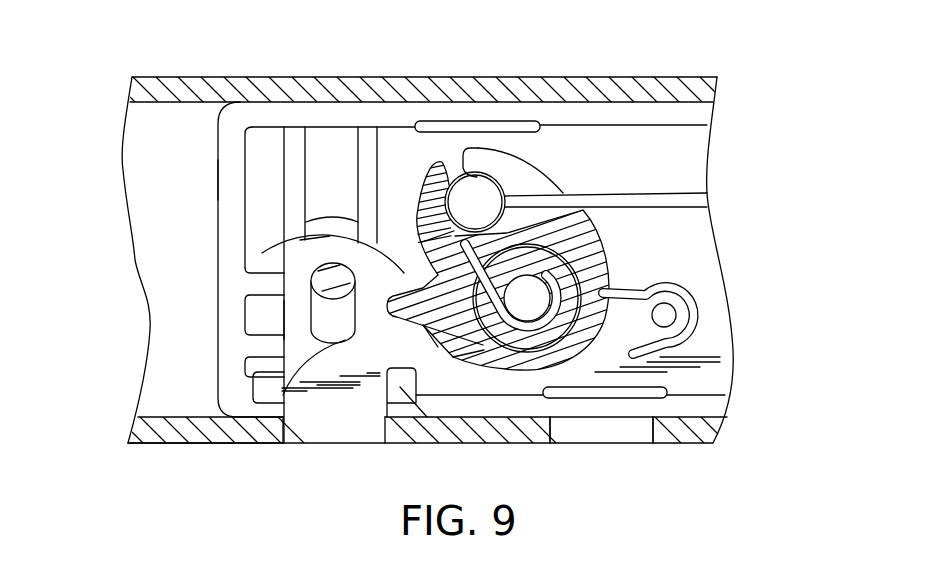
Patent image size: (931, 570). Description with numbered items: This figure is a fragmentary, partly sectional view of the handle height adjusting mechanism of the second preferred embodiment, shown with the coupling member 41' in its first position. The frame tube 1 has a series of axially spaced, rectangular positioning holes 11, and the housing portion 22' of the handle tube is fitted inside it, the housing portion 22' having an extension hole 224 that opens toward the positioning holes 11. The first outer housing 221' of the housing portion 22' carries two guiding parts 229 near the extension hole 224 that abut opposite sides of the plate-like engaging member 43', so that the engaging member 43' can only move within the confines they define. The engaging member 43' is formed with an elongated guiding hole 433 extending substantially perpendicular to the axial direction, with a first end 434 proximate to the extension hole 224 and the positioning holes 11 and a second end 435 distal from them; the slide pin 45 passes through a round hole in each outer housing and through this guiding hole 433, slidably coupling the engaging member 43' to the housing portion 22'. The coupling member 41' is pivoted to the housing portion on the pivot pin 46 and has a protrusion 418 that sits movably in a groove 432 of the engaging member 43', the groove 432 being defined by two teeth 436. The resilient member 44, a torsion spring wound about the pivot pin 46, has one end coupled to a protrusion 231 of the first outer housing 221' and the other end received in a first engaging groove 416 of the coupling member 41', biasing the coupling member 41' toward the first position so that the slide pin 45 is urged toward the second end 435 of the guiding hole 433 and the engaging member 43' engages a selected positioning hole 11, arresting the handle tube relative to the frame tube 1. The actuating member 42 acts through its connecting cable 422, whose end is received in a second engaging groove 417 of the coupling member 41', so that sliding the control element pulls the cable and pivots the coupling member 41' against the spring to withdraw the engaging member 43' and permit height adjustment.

The frame tube 1 is at (627, 443).
The housing portion 22' is at (414, 233).
The first outer housing 221' is at (133, 175).
The guiding parts 229 is at (266, 377).
The first end 434 is at (253, 386).
The slide pin 45 is at (309, 275).
The engaging member 43' is at (344, 364).
The second end 435 is at (325, 248).
The elongated guiding hole 433 is at (308, 318).
The extension hole 224 is at (386, 418).
The positioning holes 11 is at (287, 437).
The protrusion 418 is at (397, 288).
The resilient member 44 is at (627, 283).
The first engaging groove 416 is at (439, 274).
The groove 432 is at (438, 345).
The teeth 436 is at (523, 347).
The coupling member 41' is at (601, 418).
The second engaging groove 417 is at (486, 181).
The actuating member 42 is at (592, 189).
The connecting cable 422 is at (633, 197).
The pivot pin 46 is at (549, 267).
The protrusion 231 is at (664, 315).